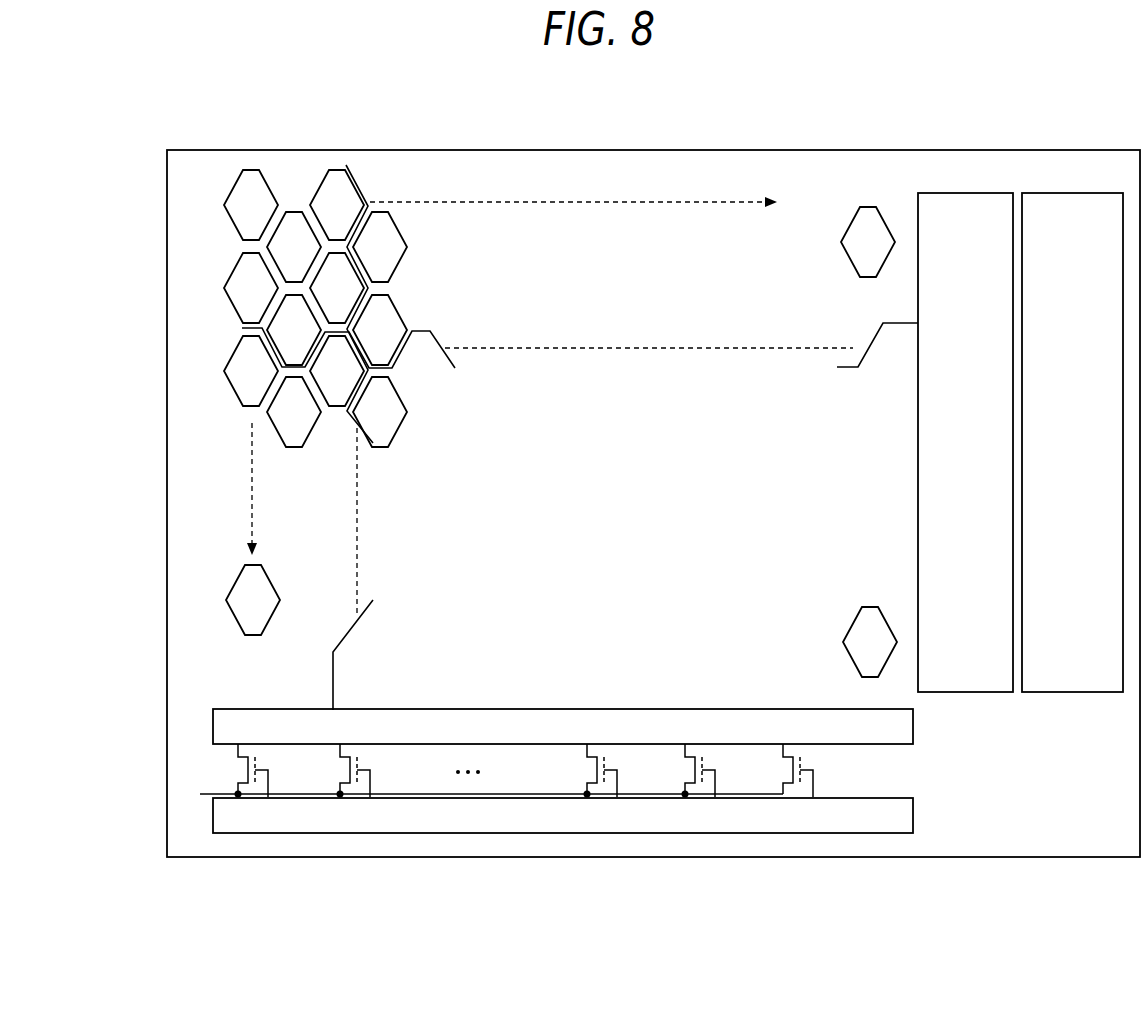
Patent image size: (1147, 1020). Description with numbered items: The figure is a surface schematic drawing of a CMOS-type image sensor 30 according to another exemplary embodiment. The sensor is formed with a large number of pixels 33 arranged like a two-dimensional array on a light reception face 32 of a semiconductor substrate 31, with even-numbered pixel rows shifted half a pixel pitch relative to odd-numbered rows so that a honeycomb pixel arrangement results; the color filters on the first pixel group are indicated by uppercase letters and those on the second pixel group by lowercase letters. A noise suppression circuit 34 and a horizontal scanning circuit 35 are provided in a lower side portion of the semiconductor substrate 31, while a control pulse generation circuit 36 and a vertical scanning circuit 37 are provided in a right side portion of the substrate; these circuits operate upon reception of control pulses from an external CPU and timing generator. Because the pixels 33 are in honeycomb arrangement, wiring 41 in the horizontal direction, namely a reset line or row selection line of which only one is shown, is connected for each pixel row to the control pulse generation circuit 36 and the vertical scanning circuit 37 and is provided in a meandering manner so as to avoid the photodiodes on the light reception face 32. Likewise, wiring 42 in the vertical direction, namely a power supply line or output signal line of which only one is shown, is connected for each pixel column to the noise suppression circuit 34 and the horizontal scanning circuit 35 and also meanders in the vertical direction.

The CMOS-type image sensor 30 is at (156, 272).
The semiconductor substrate 31 is at (182, 405).
The light reception face 32 is at (613, 444).
The pixel 33 is at (320, 187).
The noise suppression circuit 34 is at (914, 732).
The horizontal scanning circuit 35 is at (914, 818).
The control pulse generation circuit 36 is at (967, 193).
The vertical scanning circuit 37 is at (1077, 193).
The wiring in the horizontal direction 41 is at (443, 350).
The wiring in the vertical direction 42 is at (348, 417).